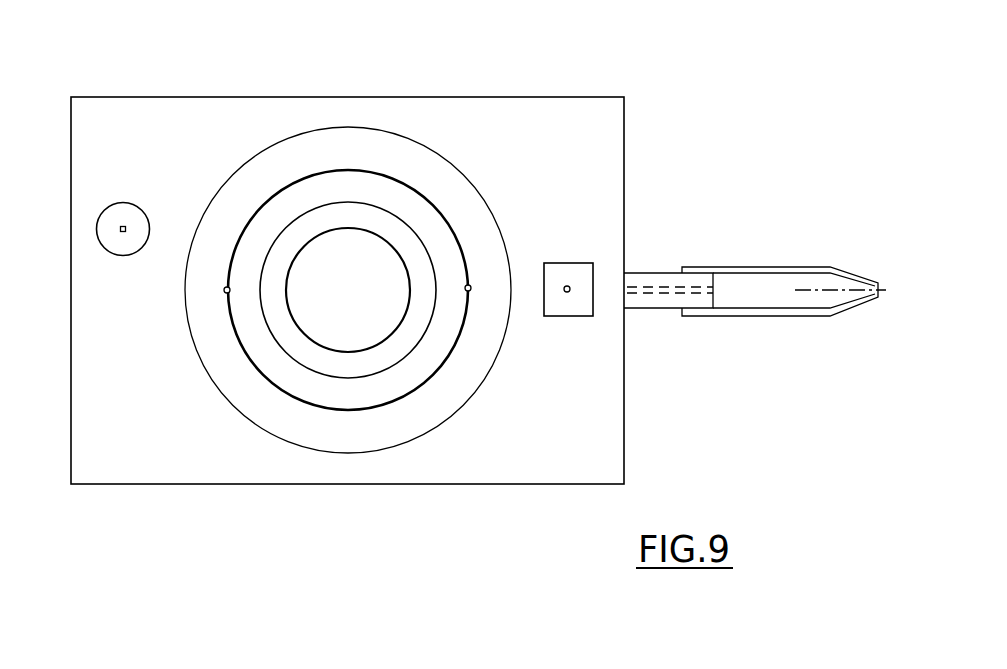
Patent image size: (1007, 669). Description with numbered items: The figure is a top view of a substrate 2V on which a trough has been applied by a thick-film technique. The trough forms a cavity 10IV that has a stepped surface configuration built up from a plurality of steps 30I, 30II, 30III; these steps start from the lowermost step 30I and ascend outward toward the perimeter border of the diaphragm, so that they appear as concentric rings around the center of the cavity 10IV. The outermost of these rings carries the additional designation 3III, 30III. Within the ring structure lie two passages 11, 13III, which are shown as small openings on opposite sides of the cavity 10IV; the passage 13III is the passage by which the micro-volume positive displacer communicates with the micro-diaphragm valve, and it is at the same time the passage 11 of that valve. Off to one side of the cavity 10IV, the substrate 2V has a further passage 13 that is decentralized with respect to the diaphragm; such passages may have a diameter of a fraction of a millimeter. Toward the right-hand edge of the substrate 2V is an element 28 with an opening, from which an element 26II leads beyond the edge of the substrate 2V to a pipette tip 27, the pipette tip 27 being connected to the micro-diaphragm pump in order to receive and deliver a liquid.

The substrate 2V is at (130, 462).
The cavity 10IV is at (331, 282).
The outer electrode 3III is at (348, 340).
The step 30III is at (287, 423).
The step 30II is at (365, 408).
The lowermost step 30I is at (402, 352).
The passage 13 is at (124, 232).
The passage of the micro-diaphragm valve 11 is at (224, 292).
The passage 13III is at (469, 285).
The connection pad 28 is at (568, 286).
The connecting lead 26II is at (647, 278).
The pipette tip 27 is at (750, 267).